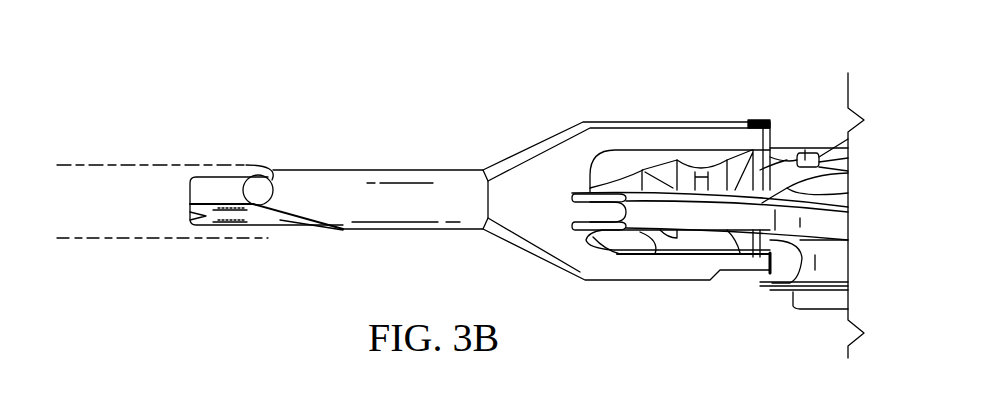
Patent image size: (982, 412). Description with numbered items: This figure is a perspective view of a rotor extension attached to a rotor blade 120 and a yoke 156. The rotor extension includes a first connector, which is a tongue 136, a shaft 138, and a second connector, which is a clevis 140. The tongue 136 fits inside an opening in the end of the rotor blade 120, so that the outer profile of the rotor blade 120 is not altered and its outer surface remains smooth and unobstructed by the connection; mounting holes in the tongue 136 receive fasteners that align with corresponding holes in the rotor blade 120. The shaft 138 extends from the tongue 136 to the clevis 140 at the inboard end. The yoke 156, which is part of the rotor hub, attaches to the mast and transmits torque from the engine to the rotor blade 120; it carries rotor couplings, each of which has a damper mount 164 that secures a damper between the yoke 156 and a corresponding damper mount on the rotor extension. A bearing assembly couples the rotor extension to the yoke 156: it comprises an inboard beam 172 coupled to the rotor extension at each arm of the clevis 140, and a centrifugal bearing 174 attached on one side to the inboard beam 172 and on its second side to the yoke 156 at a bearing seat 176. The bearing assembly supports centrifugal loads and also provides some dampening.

The rotor blade 120 is at (140, 240).
The first connector 136 is at (293, 225).
The shaft 138 is at (386, 170).
The second connector 140 is at (631, 121).
The yoke 156 is at (792, 148).
The damper mount 164 is at (578, 242).
The inboard beam 172 is at (745, 245).
The centrifugal (CF) bearing 174 is at (697, 180).
The bearing seat 176 is at (657, 253).